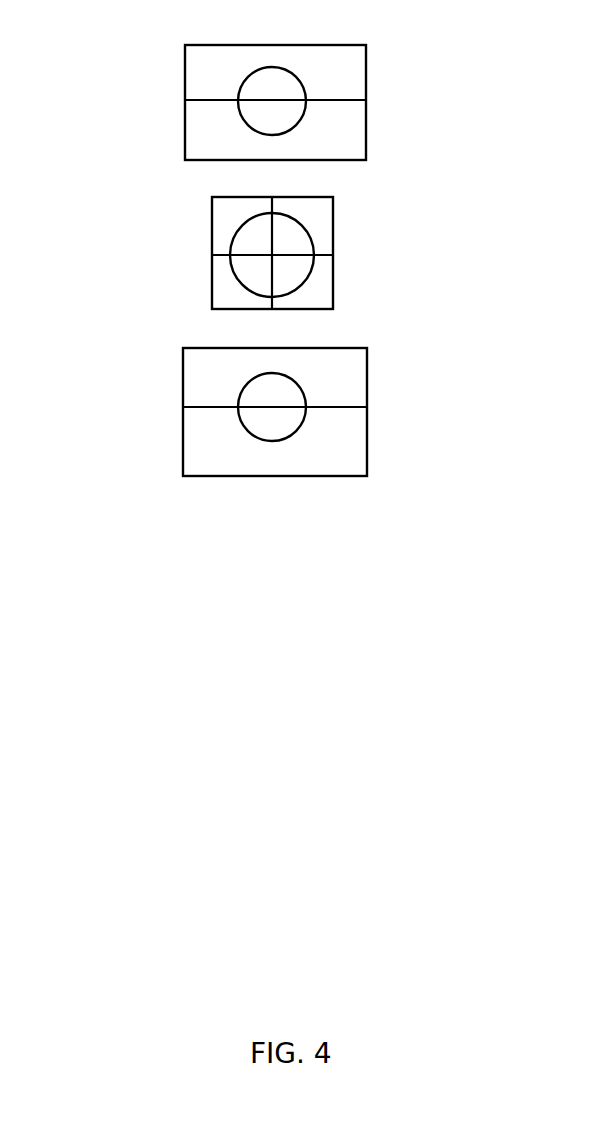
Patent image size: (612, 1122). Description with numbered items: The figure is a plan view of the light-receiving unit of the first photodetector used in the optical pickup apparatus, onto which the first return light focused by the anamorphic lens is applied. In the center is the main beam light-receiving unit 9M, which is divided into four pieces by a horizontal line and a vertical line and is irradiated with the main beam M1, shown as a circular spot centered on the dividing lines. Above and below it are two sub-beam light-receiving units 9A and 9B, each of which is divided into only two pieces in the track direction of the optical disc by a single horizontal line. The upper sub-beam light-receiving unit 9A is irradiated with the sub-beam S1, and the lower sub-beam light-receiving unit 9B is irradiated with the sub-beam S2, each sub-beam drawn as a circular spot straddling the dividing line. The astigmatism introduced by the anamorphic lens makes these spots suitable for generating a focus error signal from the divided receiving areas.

The sub-beam light-receiving unit 9A is at (366, 135).
The sub-beam S1 is at (240, 92).
The main beam light-receiving unit 9M is at (333, 285).
The main beam M1 is at (233, 272).
The sub-beam light-receiving unit 9B is at (367, 450).
The sub-beam S2 is at (240, 427).